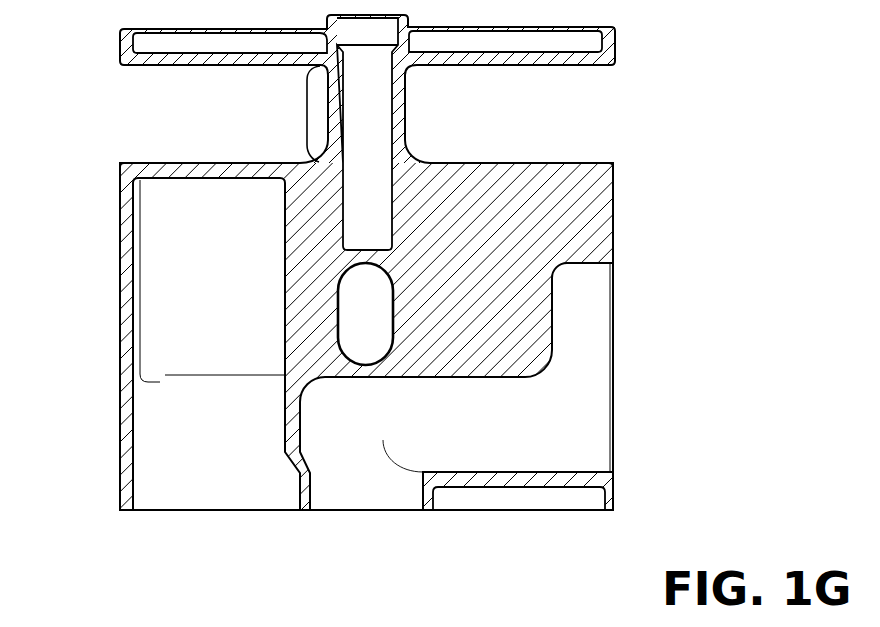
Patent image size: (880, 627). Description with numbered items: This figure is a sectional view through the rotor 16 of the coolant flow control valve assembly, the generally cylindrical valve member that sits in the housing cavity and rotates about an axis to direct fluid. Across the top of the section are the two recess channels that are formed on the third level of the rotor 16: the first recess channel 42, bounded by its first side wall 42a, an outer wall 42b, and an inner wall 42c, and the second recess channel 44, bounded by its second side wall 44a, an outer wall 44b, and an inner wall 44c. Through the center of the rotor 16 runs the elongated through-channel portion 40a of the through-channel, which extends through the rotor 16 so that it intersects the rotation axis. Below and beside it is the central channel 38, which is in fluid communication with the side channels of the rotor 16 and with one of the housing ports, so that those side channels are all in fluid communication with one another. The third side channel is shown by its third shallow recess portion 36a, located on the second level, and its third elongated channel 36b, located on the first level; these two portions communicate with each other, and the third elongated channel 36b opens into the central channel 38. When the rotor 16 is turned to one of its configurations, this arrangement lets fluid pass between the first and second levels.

The rotor 16 is at (634, 226).
The first recess channel 42 is at (118, 89).
The first side wall 42a is at (313, 103).
The outer wall 42b is at (173, 67).
The inner wall 42c is at (137, 163).
The second recess channel 44 is at (639, 98).
The second side wall 44a is at (405, 105).
The outer wall 44b is at (505, 67).
The inner wall 44c is at (597, 163).
The elongated through-channel portion 40a is at (354, 312).
The central channel 38 is at (330, 495).
The third shallow recess portion 36a is at (598, 298).
The third elongated channel 36b is at (458, 462).